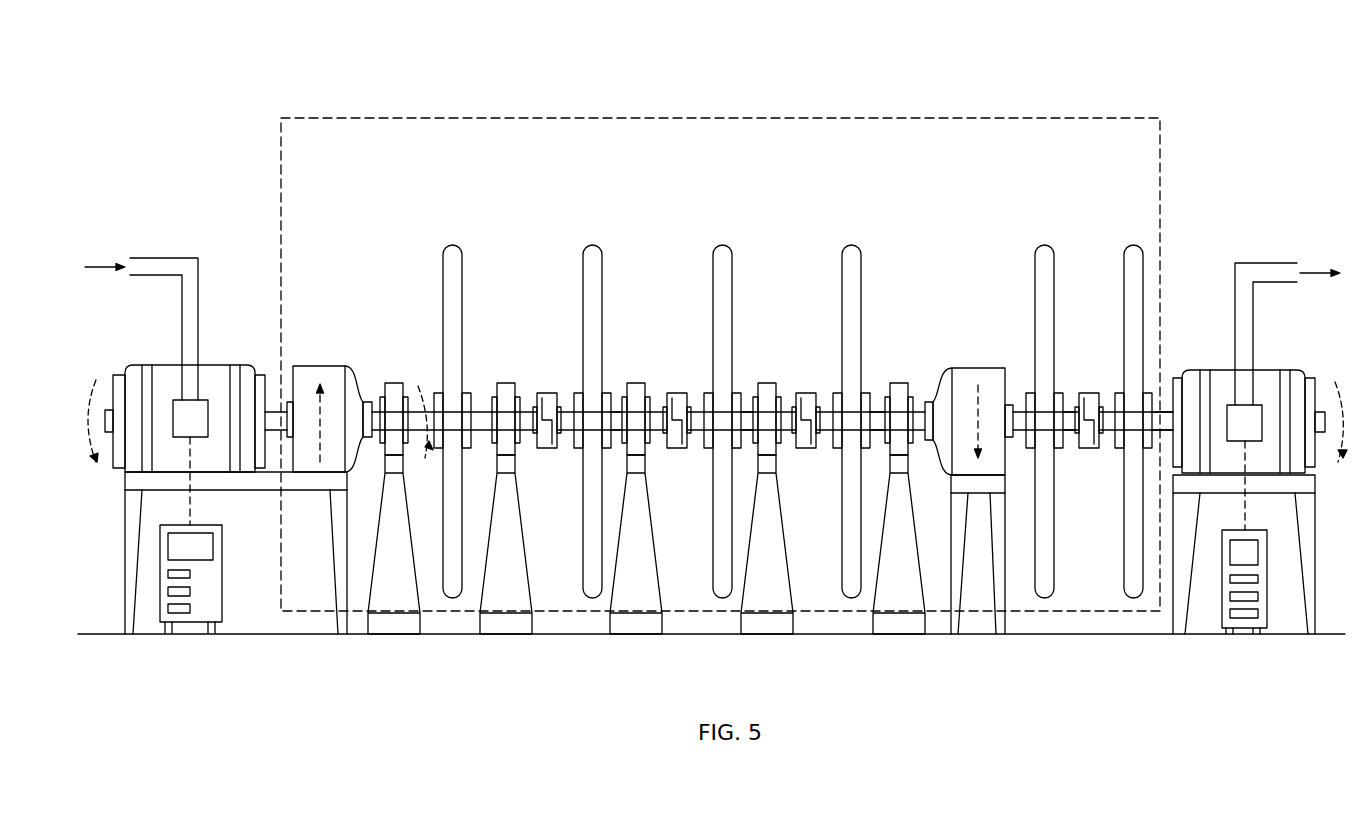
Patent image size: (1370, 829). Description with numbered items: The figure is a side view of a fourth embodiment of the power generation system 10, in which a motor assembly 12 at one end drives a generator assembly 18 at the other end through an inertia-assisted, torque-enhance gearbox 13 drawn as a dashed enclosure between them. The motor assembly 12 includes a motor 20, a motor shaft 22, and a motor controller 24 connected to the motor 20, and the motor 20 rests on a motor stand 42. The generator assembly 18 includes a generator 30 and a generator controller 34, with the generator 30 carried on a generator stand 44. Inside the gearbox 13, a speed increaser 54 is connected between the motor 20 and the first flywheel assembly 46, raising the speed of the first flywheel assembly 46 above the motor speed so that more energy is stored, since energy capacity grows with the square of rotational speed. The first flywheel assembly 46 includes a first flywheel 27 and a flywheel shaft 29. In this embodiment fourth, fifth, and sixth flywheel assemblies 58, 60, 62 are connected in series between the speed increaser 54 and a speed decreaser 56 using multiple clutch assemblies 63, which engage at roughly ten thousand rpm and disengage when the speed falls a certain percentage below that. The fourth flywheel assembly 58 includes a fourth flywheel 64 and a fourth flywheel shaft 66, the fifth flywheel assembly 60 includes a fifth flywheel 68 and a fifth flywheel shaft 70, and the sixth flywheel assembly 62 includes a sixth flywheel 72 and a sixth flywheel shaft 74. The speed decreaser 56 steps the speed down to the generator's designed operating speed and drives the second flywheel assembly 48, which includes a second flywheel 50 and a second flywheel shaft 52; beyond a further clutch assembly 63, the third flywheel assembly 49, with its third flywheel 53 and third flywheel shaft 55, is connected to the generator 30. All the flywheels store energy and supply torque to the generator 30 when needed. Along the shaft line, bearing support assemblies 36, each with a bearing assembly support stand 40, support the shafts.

The power generation system 10 is at (145, 118).
The motor assembly 12 is at (214, 338).
The inertia-assisted, torque-enhance gearbox 13 is at (765, 112).
The generator assembly 18 is at (1202, 325).
The motor 20 is at (163, 365).
The motor shaft 22 is at (277, 408).
The motor controller 24 is at (222, 550).
The first flywheel 27 is at (443, 270).
The flywheel shaft 29 is at (482, 410).
The generator 30 is at (1270, 370).
The generator controller 34 is at (1262, 612).
The bearing support assembly 36 is at (395, 375).
The bearing assembly support stand 40 is at (405, 547).
The motor stand 42 is at (130, 518).
The generator stand 44 is at (1308, 523).
The first flywheel assembly 46 is at (457, 222).
The second flywheel assembly 48 is at (1046, 222).
The third flywheel assembly 49 is at (1134, 222).
The second flywheel 50 is at (1035, 272).
The second flywheel shaft 52 is at (1067, 432).
The third flywheel 53 is at (1124, 272).
The speed increaser 54 is at (323, 366).
The third flywheel shaft 55 is at (1160, 410).
The speed decreaser 56 is at (980, 368).
The fourth flywheel assembly 58 is at (593, 222).
The fifth flywheel assembly 60 is at (721, 222).
The sixth flywheel assembly 62 is at (849, 222).
The clutch assembly 63 is at (547, 384).
The fourth flywheel 64 is at (583, 270).
The fourth flywheel shaft 66 is at (613, 410).
The fifth flywheel 68 is at (713, 270).
The fifth flywheel shaft 70 is at (743, 410).
The sixth flywheel 72 is at (842, 270).
The sixth flywheel shaft 74 is at (873, 410).